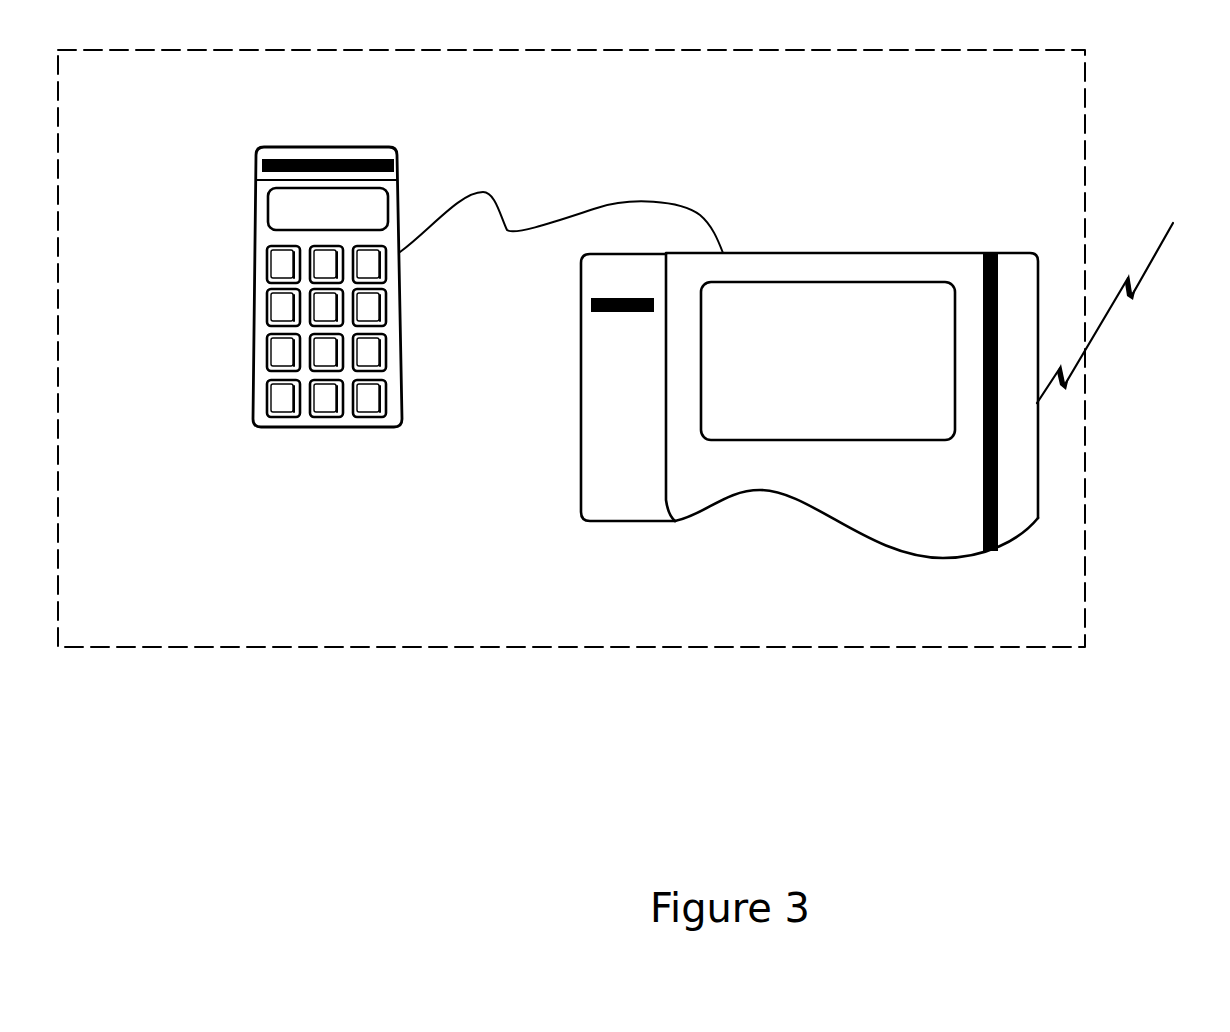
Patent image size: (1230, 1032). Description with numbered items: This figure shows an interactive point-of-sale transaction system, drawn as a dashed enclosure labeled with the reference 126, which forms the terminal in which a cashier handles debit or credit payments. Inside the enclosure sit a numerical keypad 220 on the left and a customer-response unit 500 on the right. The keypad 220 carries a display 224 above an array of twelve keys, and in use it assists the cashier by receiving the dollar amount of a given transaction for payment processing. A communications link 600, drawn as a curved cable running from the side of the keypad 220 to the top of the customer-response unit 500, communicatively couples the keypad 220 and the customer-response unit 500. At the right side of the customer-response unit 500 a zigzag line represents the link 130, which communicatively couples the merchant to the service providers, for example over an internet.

The transaction terminal 126 is at (562, 145).
The numerical keypad 220 is at (380, 315).
The keypad display 224 is at (358, 210).
The communications link 600 is at (507, 230).
The customer-response unit (CRU) 500 is at (850, 527).
The link 130 is at (1132, 285).